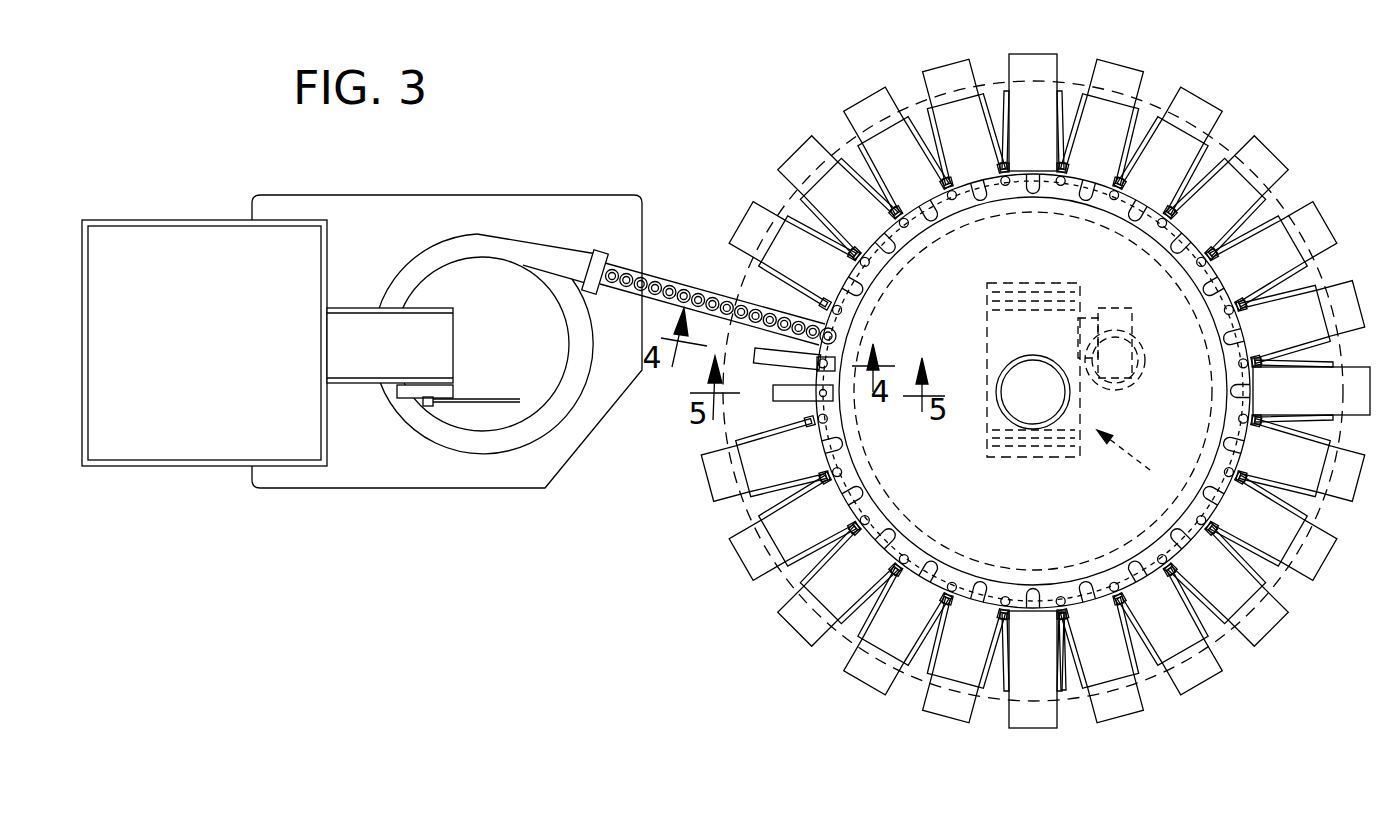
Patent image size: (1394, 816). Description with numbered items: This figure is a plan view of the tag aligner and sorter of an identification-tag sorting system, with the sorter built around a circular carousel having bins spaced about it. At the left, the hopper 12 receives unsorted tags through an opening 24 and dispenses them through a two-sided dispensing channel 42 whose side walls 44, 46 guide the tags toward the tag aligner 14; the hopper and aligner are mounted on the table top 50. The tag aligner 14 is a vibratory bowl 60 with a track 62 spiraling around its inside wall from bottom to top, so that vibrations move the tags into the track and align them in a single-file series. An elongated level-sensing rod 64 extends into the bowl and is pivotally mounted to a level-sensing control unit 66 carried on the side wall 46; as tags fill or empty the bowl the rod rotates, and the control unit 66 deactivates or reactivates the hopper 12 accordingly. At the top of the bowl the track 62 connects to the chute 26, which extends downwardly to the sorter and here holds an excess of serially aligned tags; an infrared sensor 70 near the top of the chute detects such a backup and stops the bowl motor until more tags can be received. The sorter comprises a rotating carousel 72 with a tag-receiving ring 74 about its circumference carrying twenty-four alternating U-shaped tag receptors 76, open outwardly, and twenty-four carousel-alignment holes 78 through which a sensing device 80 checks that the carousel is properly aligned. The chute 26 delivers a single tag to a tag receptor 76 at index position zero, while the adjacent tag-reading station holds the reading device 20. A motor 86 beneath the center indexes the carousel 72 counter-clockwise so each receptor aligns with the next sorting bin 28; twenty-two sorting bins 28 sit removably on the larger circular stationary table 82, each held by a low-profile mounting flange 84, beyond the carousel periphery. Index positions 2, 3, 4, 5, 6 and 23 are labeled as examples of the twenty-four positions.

The hopper 12 is at (181, 466).
The opening 24 is at (187, 348).
The table top 50 is at (478, 197).
The side wall 44 is at (357, 308).
The dispensing channel 42 is at (355, 372).
The side wall 46 is at (362, 384).
The tag aligner 14 is at (512, 448).
The track 62 is at (473, 442).
The vibratory bowl 60 is at (587, 385).
The level-sensing control unit 66 is at (450, 389).
The level-sensing rod 64 is at (487, 398).
The infrared sensor 70 is at (600, 250).
The chute 26 is at (668, 282).
The reading device 20 is at (772, 393).
The stationary table 82 is at (1222, 642).
The tag-receiving ring 74 is at (875, 522).
The tag receptor 76 is at (845, 330).
The carousel-alignment hole 78 is at (848, 462).
The sensing device 80 is at (832, 358).
The carousel 72 is at (1020, 513).
The motor 86 is at (1140, 464).
The sorting bin 28 is at (1030, 730).
The mounting flange 84 is at (1067, 690).
The index position 23 is at (826, 270).
The index position 2 is at (790, 474).
The index position 3 is at (810, 540).
The index position 4 is at (858, 593).
The index position 5 is at (915, 633).
The index position 6 is at (978, 661).